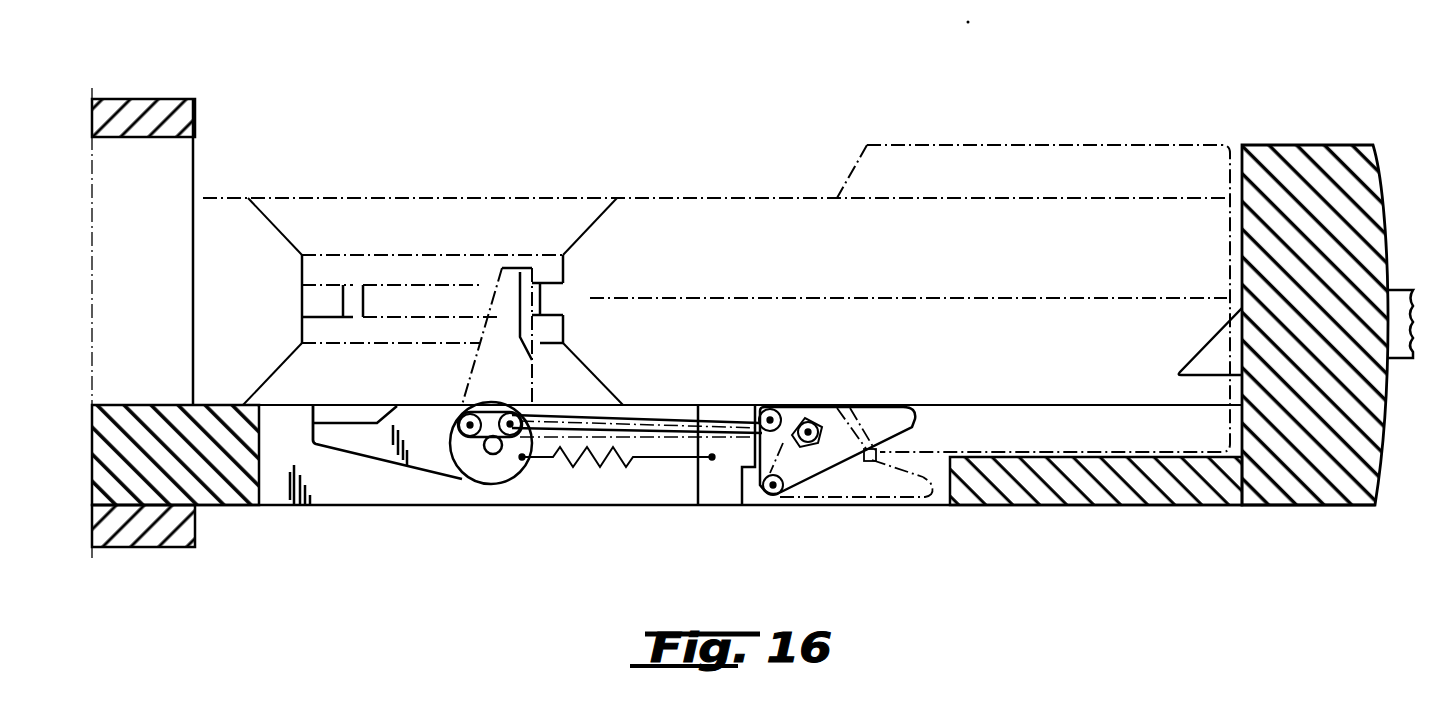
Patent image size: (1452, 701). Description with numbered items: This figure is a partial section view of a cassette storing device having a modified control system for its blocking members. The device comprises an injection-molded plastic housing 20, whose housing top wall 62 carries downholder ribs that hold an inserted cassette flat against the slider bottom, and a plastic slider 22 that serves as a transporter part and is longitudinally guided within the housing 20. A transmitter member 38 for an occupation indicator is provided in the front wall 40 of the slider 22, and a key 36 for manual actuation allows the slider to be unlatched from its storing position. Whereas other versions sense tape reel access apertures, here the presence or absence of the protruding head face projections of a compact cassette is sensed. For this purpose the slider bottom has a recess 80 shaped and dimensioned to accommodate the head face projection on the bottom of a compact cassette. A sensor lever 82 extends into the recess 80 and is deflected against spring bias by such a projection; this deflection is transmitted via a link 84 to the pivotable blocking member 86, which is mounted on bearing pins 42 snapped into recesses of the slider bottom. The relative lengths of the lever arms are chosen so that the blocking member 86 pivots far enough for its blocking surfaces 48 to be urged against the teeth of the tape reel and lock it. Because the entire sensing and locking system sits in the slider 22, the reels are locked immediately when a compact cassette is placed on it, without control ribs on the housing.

The housing 20 is at (127, 99).
The housing top wall 62 is at (183, 121).
The slider 22 is at (1088, 505).
The front wall 40 is at (1322, 160).
The key 36 is at (1400, 292).
The transmitter member 38 is at (1212, 362).
The recess 80 is at (1067, 456).
The blocking surfaces 48 is at (342, 410).
The blocking member 86 is at (378, 452).
The bearing pins 42 is at (493, 454).
The link 84 is at (655, 427).
The sensor lever 82 is at (885, 420).